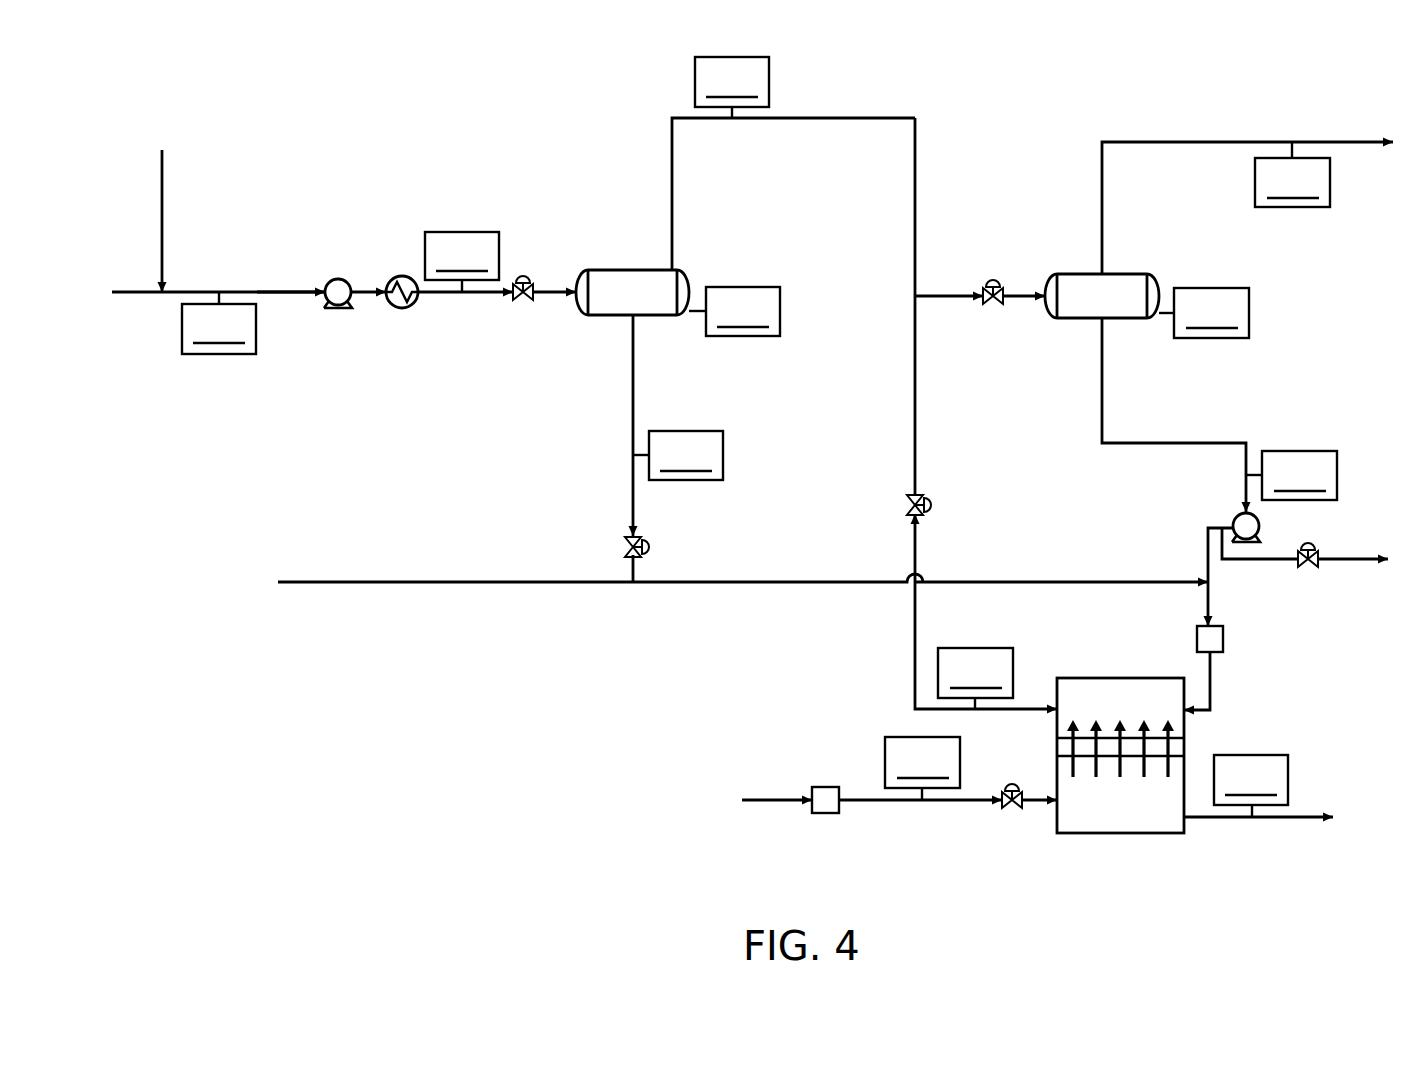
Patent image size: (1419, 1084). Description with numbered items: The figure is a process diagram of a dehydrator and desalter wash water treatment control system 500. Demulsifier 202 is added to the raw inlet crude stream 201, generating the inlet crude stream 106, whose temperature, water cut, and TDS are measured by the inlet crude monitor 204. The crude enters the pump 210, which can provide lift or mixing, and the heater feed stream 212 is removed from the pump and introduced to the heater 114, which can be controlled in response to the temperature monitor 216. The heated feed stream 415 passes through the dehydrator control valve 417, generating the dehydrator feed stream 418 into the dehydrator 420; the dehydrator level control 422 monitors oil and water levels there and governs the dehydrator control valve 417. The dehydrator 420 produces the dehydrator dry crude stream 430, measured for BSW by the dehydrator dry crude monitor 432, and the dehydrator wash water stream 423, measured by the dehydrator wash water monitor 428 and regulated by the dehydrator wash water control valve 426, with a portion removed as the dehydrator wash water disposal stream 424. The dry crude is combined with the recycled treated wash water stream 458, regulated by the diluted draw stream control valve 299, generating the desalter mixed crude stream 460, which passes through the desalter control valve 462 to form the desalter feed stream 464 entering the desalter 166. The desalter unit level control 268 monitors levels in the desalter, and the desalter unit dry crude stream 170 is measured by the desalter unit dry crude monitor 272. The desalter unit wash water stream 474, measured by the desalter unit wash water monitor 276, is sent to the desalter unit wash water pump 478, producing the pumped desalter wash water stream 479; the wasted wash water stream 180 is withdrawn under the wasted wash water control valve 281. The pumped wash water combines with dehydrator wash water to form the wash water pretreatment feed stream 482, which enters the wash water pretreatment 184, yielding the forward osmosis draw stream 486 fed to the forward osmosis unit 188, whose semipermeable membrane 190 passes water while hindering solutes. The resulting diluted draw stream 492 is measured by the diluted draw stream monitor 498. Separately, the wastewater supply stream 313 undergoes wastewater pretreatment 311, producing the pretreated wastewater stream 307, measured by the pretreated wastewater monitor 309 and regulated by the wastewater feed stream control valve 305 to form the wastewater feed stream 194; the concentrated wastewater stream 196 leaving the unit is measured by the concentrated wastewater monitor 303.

The dehydrator and desalter wash water treatment control system 500 is at (240, 76).
The raw inlet crude stream 201 is at (143, 292).
The demulsifier 202 is at (162, 188).
The inlet crude monitor 204 is at (219, 323).
The pump 210 is at (336, 279).
The inlet crude stream 106 is at (300, 292).
The heater feed stream 212 is at (366, 296).
The heater 114 is at (400, 308).
The temperature monitor 216 is at (462, 262).
The heated feed stream 415 is at (475, 292).
The dehydrator control valve 417 is at (527, 300).
The dehydrator feed stream 418 is at (550, 292).
The dehydrator 420 is at (648, 270).
The dehydrator level control 422 is at (734, 311).
The dehydrator dry crude stream 430 is at (672, 175).
The dehydrator dry crude monitor 432 is at (732, 87).
The dehydrator wash water stream 423 is at (633, 421).
The dehydrator wash water monitor 428 is at (678, 455).
The dehydrator wash water control valve 426 is at (625, 547).
The dehydrator wash water disposal stream 424 is at (437, 582).
The recycled treated wash water stream 458 is at (915, 383).
The diluted draw stream control valve 299 is at (909, 505).
The desalter mixed crude stream 460 is at (952, 296).
The desalter control valve 462 is at (997, 304).
The desalter feed stream 464 is at (1032, 296).
The desalter 166 is at (1122, 274).
The desalter unit level control 268 is at (1204, 313).
The desalter unit dry crude stream 170 is at (1102, 180).
The desalter unit dry crude monitor 272 is at (1292, 174).
The desalter unit wash water stream 474 is at (1102, 385).
The desalter unit wash water monitor 276 is at (1291, 475).
The desalter unit wash water pump 478 is at (1236, 516).
The pumped desalter wash water stream 479 is at (1208, 547).
The wasted wash water stream 180 is at (1285, 559).
The wasted wash water control valve 281 is at (1308, 567).
The wash water pretreatment feed stream 482 is at (1208, 600).
The wash water pretreatment 184 is at (1223, 639).
The forward osmosis draw stream 486 is at (1210, 685).
The forward osmosis unit 188 is at (1117, 678).
The semipermeable membrane 190 is at (1057, 748).
The diluted draw stream 492 is at (915, 632).
The diluted draw stream monitor 498 is at (975, 678).
The wastewater supply stream 313 is at (770, 800).
The wastewater pretreatment 311 is at (826, 787).
The pretreated wastewater stream 307 is at (952, 805).
The pretreated wastewater monitor 309 is at (922, 768).
The wastewater feed stream control valve 305 is at (1010, 810).
The wastewater feed stream 194 is at (1030, 805).
The concentrated wastewater stream 196 is at (1315, 817).
The concentrated wastewater monitor 303 is at (1251, 786).